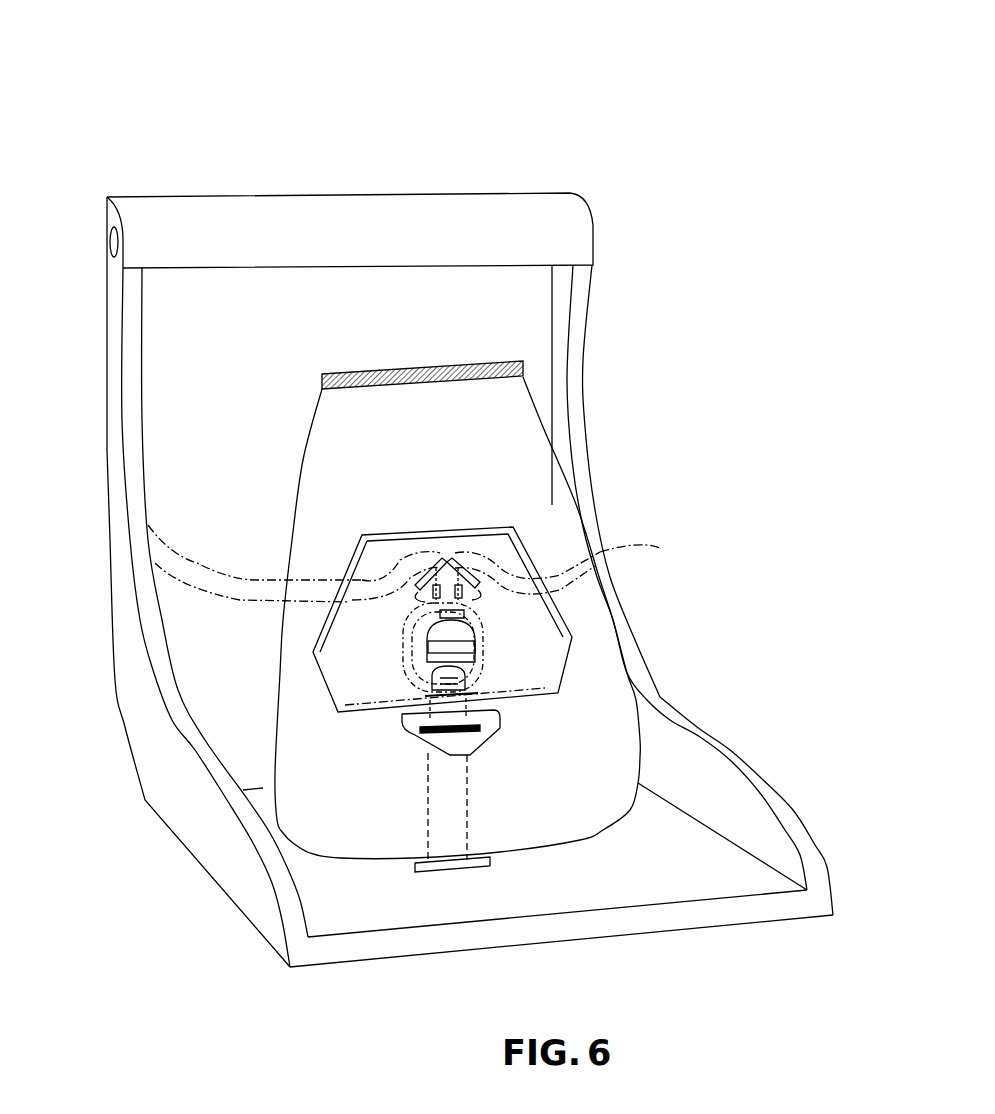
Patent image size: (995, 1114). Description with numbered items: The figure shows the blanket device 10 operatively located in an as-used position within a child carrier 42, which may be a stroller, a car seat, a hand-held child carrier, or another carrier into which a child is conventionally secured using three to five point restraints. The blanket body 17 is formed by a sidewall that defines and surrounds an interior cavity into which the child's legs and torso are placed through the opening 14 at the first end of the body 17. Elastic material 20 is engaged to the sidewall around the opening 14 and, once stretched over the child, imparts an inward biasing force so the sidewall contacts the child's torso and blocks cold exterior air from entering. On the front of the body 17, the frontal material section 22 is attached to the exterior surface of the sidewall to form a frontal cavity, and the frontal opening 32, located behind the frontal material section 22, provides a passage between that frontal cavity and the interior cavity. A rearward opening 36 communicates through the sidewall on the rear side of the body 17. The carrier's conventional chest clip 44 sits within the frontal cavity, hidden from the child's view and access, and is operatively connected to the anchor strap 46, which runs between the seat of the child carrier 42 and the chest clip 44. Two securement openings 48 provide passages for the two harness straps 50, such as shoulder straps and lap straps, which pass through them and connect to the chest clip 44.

The blanket device 10 is at (584, 527).
The opening 14 is at (390, 372).
The body 17 is at (303, 460).
The elastic material 20 is at (457, 372).
The frontal material section 22 is at (532, 672).
The frontal opening 32 is at (425, 695).
The rearward opening 36 is at (470, 730).
The child carrier 42 is at (530, 233).
The chest clip 44 is at (480, 647).
The anchor strap 46 is at (462, 830).
The securement openings 48 is at (352, 575).
The harness straps 50 is at (192, 570).